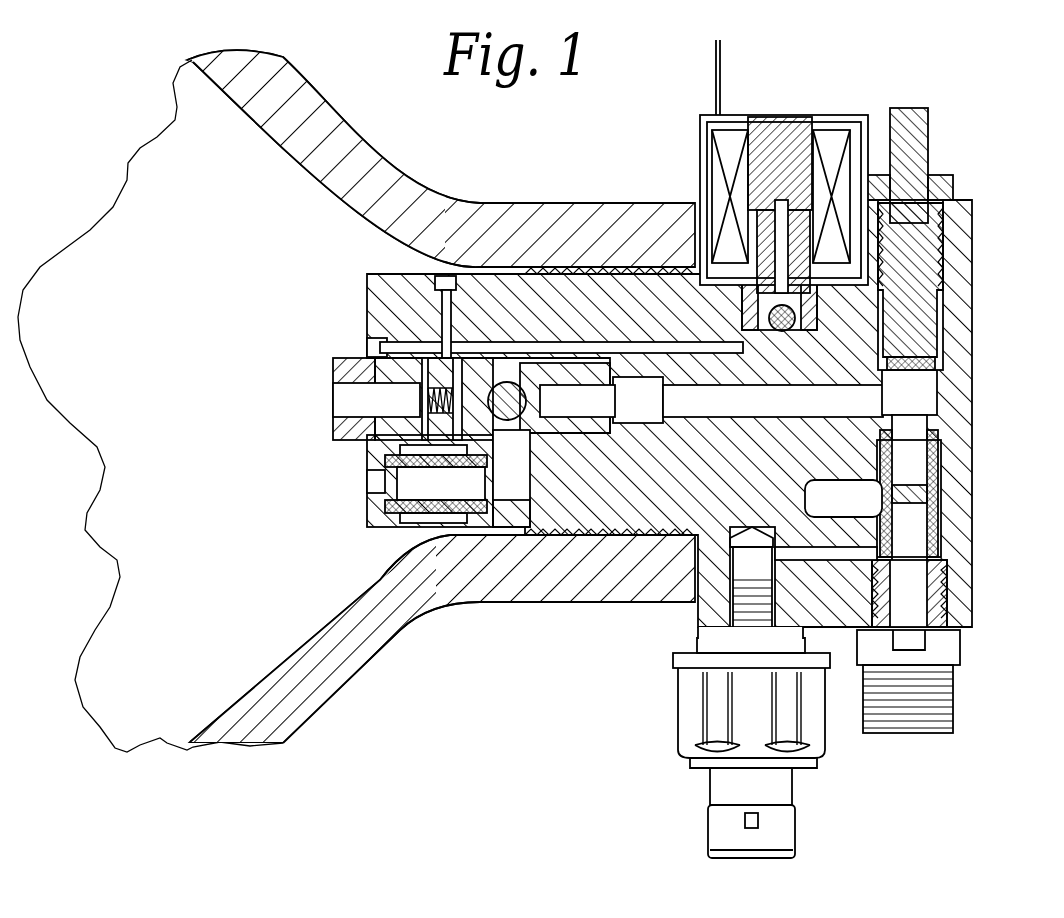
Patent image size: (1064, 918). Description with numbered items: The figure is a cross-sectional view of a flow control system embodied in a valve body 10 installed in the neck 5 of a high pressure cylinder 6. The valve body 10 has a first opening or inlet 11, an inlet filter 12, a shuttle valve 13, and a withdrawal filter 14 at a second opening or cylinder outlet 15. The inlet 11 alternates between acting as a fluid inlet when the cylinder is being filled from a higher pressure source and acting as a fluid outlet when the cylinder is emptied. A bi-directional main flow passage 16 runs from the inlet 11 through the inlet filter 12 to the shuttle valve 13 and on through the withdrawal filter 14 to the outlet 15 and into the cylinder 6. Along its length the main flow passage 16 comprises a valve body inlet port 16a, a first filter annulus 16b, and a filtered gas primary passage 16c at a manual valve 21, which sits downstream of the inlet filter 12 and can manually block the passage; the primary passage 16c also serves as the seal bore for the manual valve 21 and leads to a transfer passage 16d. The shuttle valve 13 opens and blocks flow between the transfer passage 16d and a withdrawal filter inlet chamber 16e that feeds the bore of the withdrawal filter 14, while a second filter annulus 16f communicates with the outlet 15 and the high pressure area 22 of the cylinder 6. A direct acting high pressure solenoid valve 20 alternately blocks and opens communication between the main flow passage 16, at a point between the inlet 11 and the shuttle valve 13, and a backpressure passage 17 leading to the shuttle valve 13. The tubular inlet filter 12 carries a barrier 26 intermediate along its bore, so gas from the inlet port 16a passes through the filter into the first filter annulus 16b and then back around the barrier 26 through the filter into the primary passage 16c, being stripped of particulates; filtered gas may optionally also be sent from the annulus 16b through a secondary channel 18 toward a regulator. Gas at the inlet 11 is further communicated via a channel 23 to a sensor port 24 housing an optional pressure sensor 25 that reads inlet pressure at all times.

The neck 5 is at (632, 582).
The high pressure cylinder 6 is at (385, 607).
The valve body 10 is at (630, 460).
The inlet 11 is at (948, 653).
The inlet filter 12 is at (940, 513).
The shuttle valve 13 is at (430, 335).
The withdrawal filter 14 is at (405, 528).
The cylinder outlet 15 is at (363, 520).
The main flow passage 16 is at (710, 410).
The valve body inlet port 16a is at (910, 613).
The first filter annulus 16b is at (942, 460).
The filtered gas primary passage 16c is at (910, 387).
The transfer passage 16d is at (768, 409).
The withdrawal filter inlet chamber 16e is at (590, 495).
The second filter annulus 16f is at (370, 478).
The backpressure passage 17 is at (755, 378).
The secondary channel 18 is at (852, 511).
The solenoid valve 20 is at (812, 117).
The manual valve 21 is at (940, 247).
The high pressure area 22 is at (136, 402).
The channel 23 is at (778, 600).
The sensor port 24 is at (745, 600).
The pressure sensor 25 is at (703, 767).
The barrier 26 is at (947, 477).